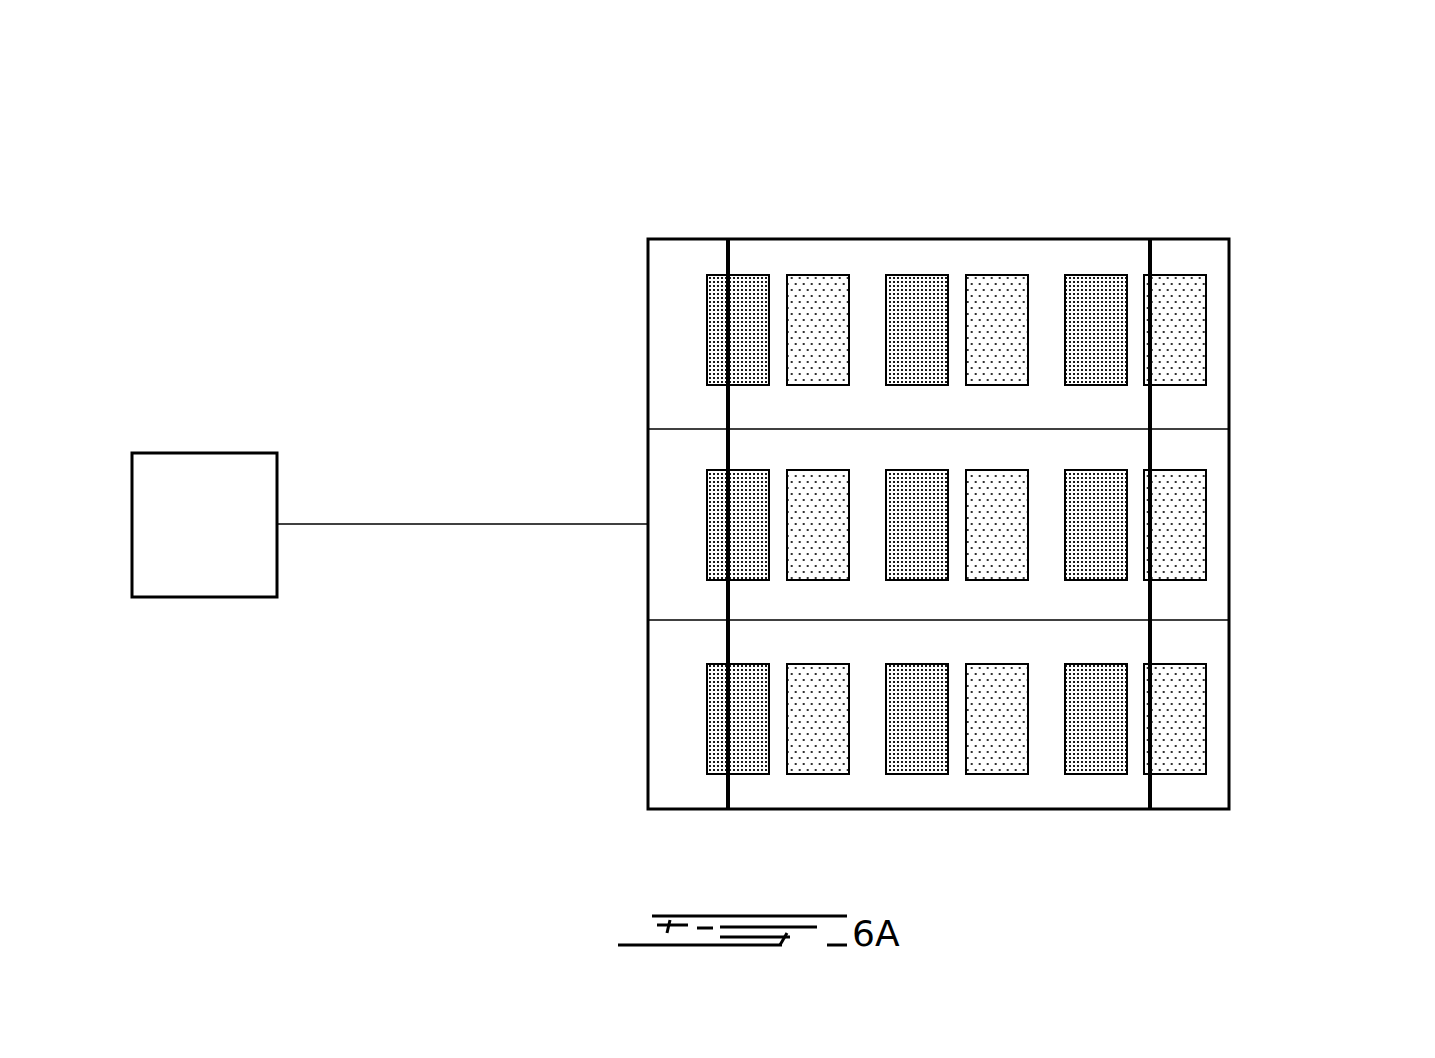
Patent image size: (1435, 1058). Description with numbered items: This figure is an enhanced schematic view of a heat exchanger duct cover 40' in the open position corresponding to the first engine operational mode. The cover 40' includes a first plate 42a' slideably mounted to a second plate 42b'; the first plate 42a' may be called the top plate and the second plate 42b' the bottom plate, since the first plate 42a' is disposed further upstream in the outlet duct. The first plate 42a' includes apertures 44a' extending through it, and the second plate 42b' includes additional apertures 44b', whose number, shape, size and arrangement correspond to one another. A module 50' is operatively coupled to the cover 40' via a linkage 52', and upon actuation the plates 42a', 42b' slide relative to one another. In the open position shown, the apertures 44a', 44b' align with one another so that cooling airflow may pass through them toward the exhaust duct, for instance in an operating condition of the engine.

The cover 40' is at (952, 448).
The first plate 42a' is at (603, 524).
The second plate 42b' is at (1275, 524).
The apertures 44a' is at (917, 519).
The additional apertures 44b' is at (1107, 524).
The module 50' is at (204, 458).
The linkage 52' is at (462, 601).